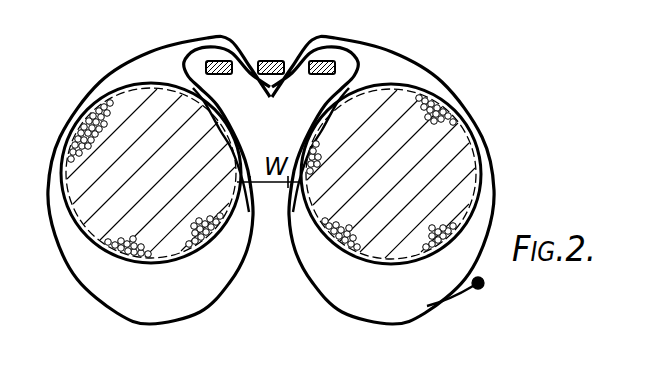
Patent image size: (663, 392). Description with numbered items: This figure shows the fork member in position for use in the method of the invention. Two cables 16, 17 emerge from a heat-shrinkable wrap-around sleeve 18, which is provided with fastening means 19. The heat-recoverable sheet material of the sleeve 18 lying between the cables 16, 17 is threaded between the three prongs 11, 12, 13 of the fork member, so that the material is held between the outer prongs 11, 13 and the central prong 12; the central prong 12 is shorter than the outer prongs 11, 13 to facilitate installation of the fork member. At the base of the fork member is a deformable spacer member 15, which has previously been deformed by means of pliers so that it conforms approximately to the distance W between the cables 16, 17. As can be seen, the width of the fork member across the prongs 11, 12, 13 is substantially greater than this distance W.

The outer prong 11 is at (220, 61).
The central prong 12 is at (269, 61).
The outer prong 13 is at (322, 62).
The deformable spacer member 15 is at (75, 7).
The cable 16 is at (84, 118).
The cable 17 is at (450, 133).
The heat-shrinkable wrap-around sleeve 18 is at (358, 322).
The fastening means 19 is at (480, 289).